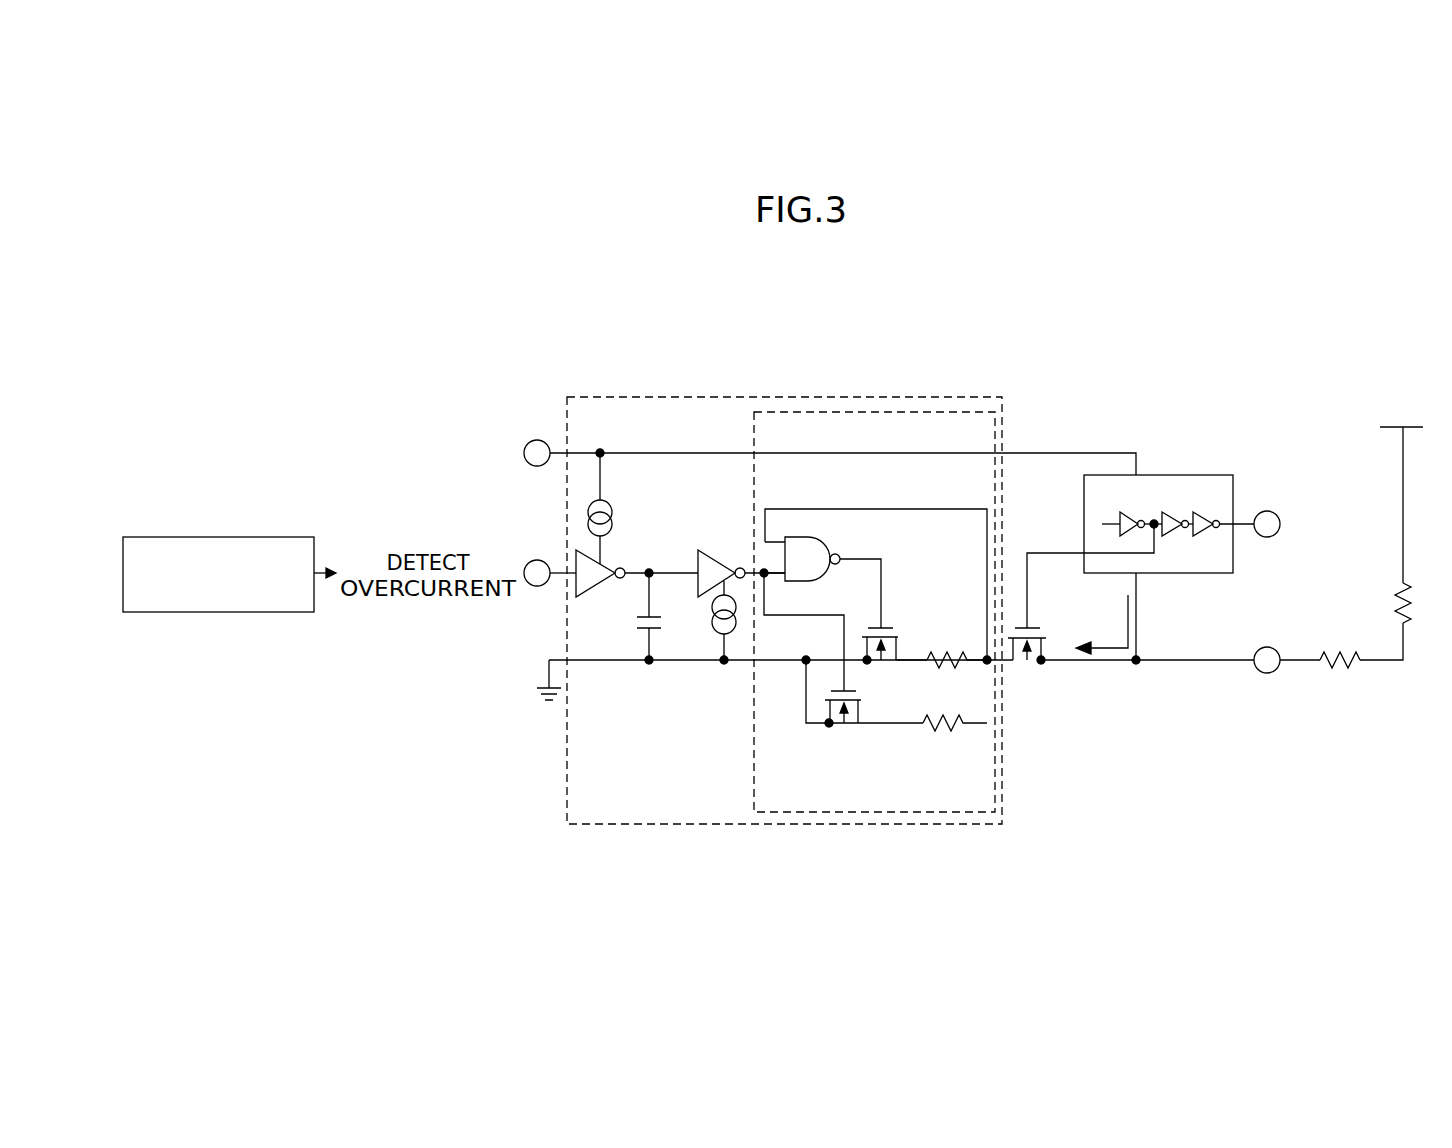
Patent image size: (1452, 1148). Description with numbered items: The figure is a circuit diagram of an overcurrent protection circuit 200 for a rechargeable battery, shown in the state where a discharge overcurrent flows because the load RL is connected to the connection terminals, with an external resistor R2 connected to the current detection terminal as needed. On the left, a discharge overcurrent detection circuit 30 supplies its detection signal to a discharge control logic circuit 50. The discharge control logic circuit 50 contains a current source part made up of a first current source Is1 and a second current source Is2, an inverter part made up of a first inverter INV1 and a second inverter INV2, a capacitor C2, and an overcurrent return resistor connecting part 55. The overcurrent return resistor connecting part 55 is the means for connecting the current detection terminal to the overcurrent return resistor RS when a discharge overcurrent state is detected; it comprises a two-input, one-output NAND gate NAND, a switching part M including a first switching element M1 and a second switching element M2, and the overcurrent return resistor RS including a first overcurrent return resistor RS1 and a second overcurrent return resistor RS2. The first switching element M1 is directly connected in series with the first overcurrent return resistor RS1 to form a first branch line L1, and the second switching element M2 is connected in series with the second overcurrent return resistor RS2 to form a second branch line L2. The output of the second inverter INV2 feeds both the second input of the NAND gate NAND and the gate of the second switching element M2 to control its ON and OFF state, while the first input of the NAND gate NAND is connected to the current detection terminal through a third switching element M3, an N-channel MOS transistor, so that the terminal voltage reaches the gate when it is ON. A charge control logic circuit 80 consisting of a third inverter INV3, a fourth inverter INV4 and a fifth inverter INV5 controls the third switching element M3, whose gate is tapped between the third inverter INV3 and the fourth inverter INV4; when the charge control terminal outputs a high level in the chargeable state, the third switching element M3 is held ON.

The discharge overcurrent detection circuit 30 is at (293, 537).
The discharge control logic circuit 50 is at (603, 396).
The overcurrent return resistor connecting part 55 is at (816, 412).
The charge control logic circuit 80 is at (1163, 465).
The overcurrent protection circuit 200 is at (950, 368).
The first inverter INV1 is at (566, 590).
The second inverter INV2 is at (709, 548).
The third inverter INV3 is at (1118, 522).
The fourth inverter INV4 is at (1167, 512).
The fifth inverter INV5 is at (1203, 513).
The first current source Is1 is at (620, 508).
The second current source Is2 is at (705, 620).
The capacitor C2 is at (632, 616).
The NAND gate NAND is at (827, 548).
The first switching element M1 is at (891, 630).
The second switching element M2 is at (862, 699).
The third switching element M3 is at (1081, 592).
The switching part M is at (826, 677).
The first branch line L1 is at (912, 660).
The second branch line L2 is at (895, 723).
The first overcurrent return resistor RS1 is at (957, 646).
The second overcurrent return resistor RS2 is at (955, 738).
The overcurrent return resistor RS is at (962, 685).
The external resistor R2 is at (1340, 675).
The load RL is at (1420, 603).